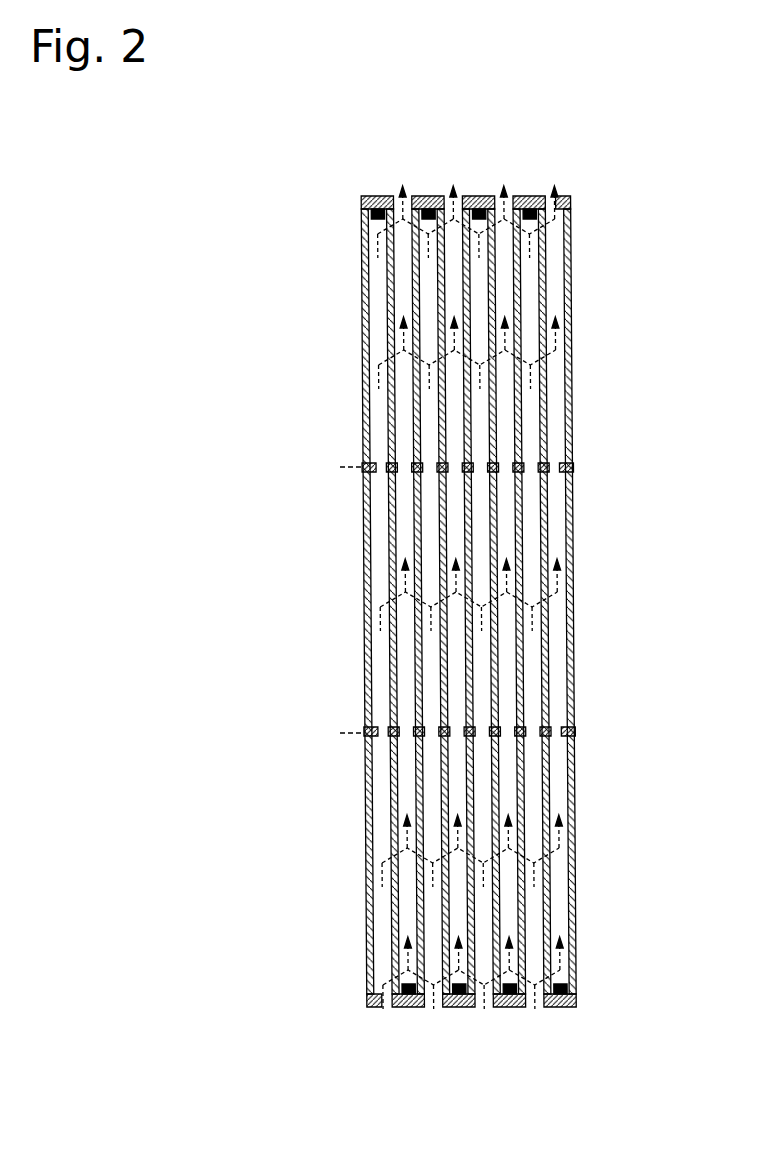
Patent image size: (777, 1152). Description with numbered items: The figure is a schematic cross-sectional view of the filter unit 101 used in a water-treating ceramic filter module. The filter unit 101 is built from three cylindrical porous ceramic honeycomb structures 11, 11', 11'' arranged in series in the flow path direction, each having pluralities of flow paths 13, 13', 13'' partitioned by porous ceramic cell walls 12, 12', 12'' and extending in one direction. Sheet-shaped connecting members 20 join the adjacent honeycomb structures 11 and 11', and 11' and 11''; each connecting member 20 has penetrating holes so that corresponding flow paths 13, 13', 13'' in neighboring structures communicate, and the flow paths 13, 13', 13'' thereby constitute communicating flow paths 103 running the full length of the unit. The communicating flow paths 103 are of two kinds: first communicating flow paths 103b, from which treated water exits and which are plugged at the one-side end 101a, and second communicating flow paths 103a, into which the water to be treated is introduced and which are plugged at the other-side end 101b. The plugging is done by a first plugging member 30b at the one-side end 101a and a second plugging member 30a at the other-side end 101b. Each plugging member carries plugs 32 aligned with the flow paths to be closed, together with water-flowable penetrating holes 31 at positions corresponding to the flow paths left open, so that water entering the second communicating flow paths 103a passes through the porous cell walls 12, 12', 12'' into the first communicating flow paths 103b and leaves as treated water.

The filter unit 101 is at (323, 183).
The one-side end 101a is at (483, 997).
The other-side end 101b is at (504, 202).
The honeycomb structure 11 is at (473, 900).
The honeycomb structure 11' is at (470, 595).
The honeycomb structure 11'' is at (469, 304).
The porous ceramic cell wall 12 is at (458, 875).
The porous ceramic cell wall 12' is at (456, 619).
The porous ceramic cell wall 12'' is at (454, 311).
The flow path 13 is at (473, 900).
The flow path 13' is at (470, 583).
The flow path 13'' is at (469, 292).
The connecting member 20 is at (468, 599).
The second plugging member 30a is at (466, 207).
The first plugging member 30b is at (472, 995).
The penetrating hole 31 is at (394, 597).
The plug 32 is at (377, 207).
The communicating flow path 103 is at (557, 601).
The second communicating flow path 103a is at (544, 601).
The first communicating flow path 103b is at (570, 601).